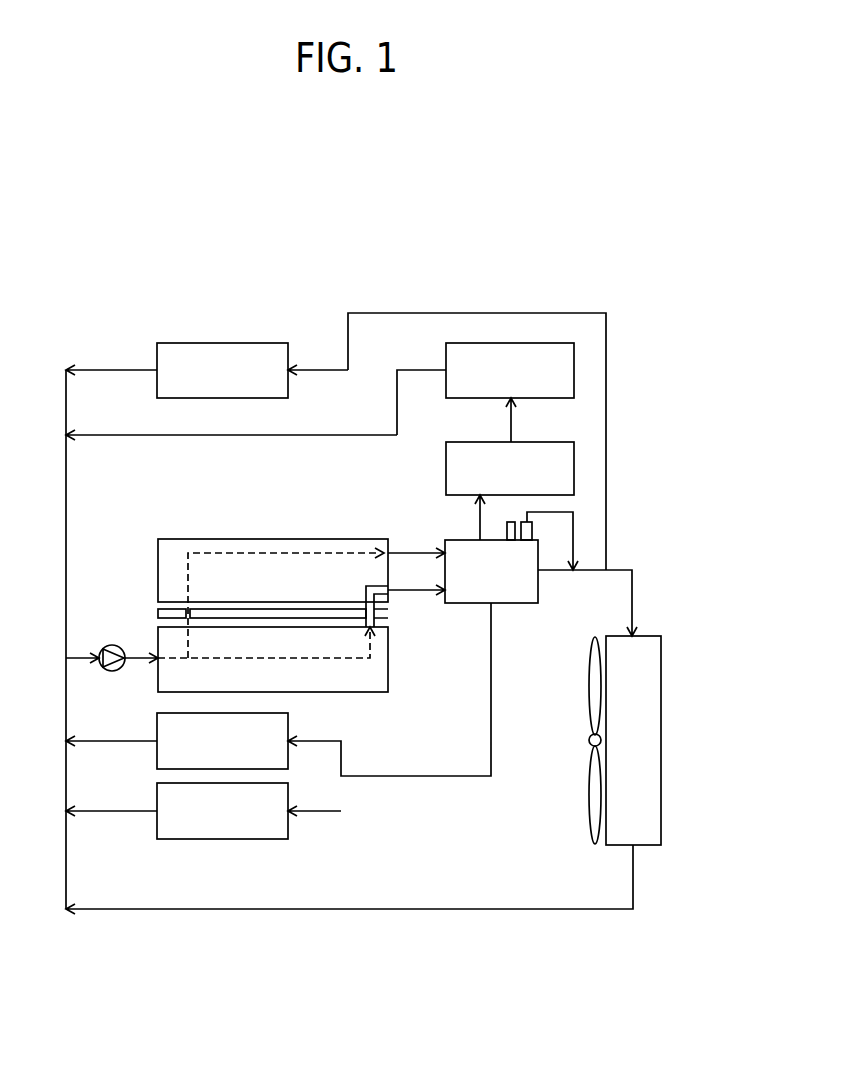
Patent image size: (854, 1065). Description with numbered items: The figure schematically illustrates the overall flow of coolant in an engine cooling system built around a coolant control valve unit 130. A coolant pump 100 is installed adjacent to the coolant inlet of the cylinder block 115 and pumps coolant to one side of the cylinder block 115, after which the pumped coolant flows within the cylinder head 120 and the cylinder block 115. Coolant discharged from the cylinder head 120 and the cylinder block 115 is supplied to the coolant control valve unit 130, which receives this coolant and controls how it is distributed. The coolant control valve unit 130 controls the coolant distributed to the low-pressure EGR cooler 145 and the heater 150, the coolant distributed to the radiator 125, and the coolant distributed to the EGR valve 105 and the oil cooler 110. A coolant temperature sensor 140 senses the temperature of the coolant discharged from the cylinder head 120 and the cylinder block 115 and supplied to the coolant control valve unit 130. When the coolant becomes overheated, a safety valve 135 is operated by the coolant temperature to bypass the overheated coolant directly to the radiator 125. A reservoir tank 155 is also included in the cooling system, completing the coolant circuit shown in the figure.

The coolant pump 100 is at (112, 645).
The exhaust gas recirculation (EGR) valve 105 is at (157, 753).
The oil cooler 110 is at (222, 839).
The cylinder block 115 is at (158, 678).
The cylinder head 120 is at (158, 572).
The radiator 125 is at (663, 740).
The coolant control valve unit 130 is at (521, 603).
The safety valve 135 is at (532, 531).
The coolant temperature sensor 140 is at (511, 522).
The low-pressure EGR cooler 145 is at (574, 467).
The heater 150 is at (574, 370).
The reservoir tank 155 is at (222, 343).